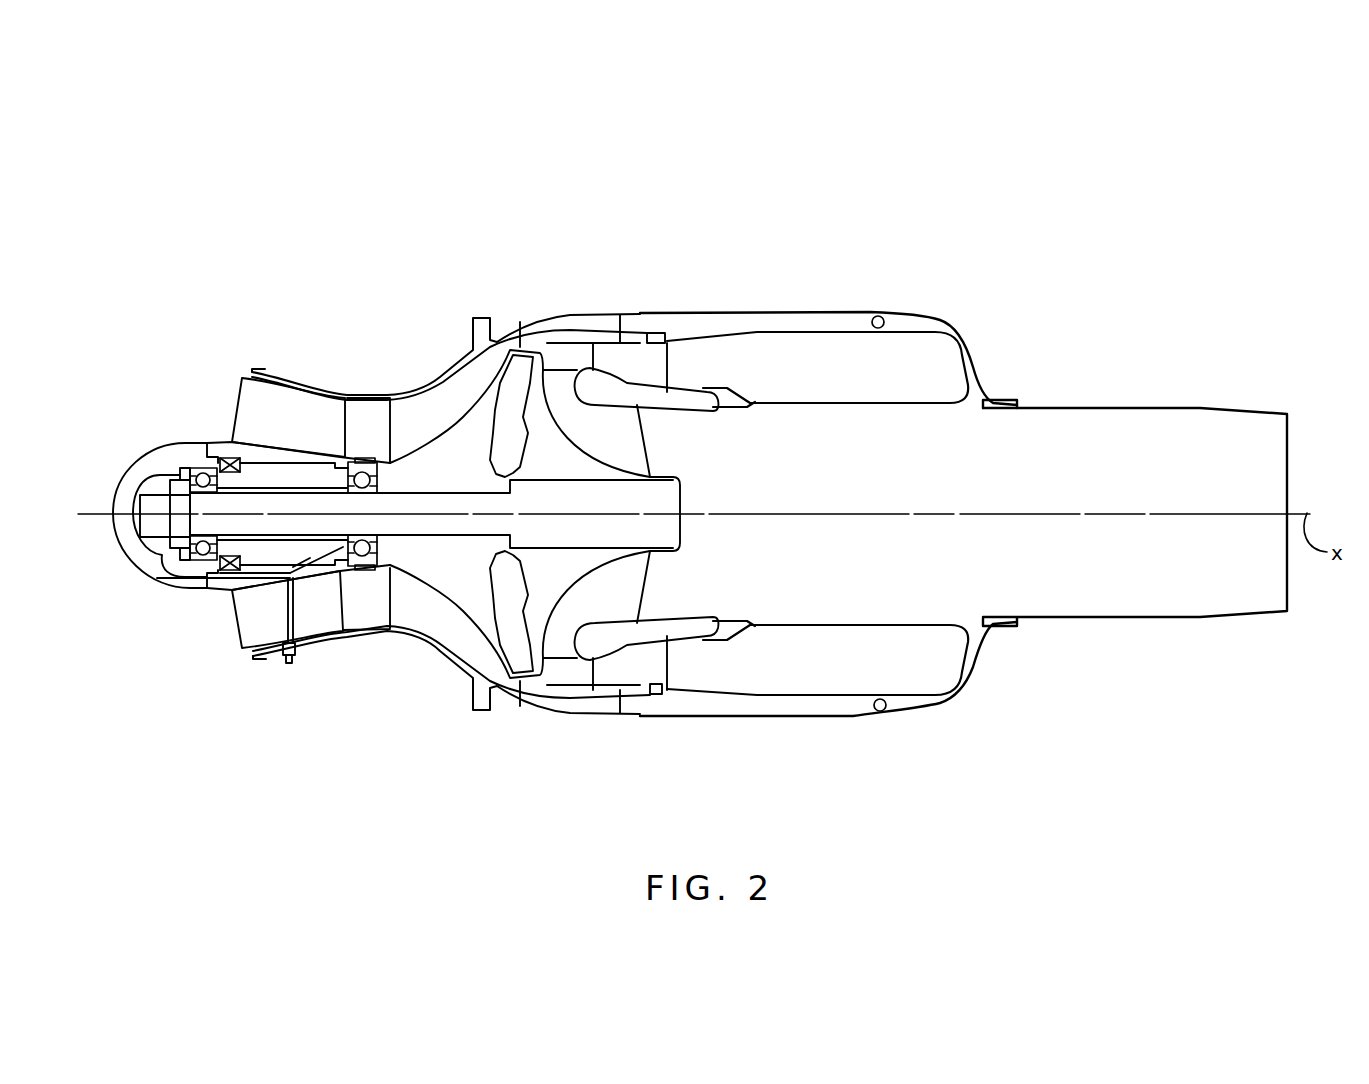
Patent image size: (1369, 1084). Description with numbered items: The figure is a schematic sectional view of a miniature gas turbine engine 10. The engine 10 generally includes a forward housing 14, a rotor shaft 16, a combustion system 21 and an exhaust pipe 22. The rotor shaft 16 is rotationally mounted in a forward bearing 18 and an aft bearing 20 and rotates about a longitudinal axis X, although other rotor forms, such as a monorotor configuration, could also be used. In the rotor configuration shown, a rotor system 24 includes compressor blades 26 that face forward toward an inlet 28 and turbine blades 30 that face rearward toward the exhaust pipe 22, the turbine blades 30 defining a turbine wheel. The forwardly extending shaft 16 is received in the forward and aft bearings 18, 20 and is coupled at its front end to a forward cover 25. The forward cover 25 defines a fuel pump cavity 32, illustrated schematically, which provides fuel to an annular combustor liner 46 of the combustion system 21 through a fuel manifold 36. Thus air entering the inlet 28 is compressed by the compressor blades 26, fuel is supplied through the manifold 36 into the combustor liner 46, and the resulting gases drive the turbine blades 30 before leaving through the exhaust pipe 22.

The miniature gas turbine engine 10 is at (952, 192).
The forward housing 14 is at (418, 388).
The rotor shaft 16 is at (458, 507).
The forward bearing 18 is at (207, 465).
The aft bearing 20 is at (363, 568).
The combustion system 21 is at (993, 320).
The exhaust pipe 22 is at (1190, 407).
The rotor system 24 is at (690, 456).
The forward cover 25 is at (137, 558).
The compressor blades 26 is at (513, 628).
The inlet 28 is at (253, 621).
The turbine blades 30 is at (613, 592).
The fuel pump cavity 32 is at (147, 542).
The fuel manifold 36 is at (885, 313).
The annular combustor liner 46 is at (827, 330).